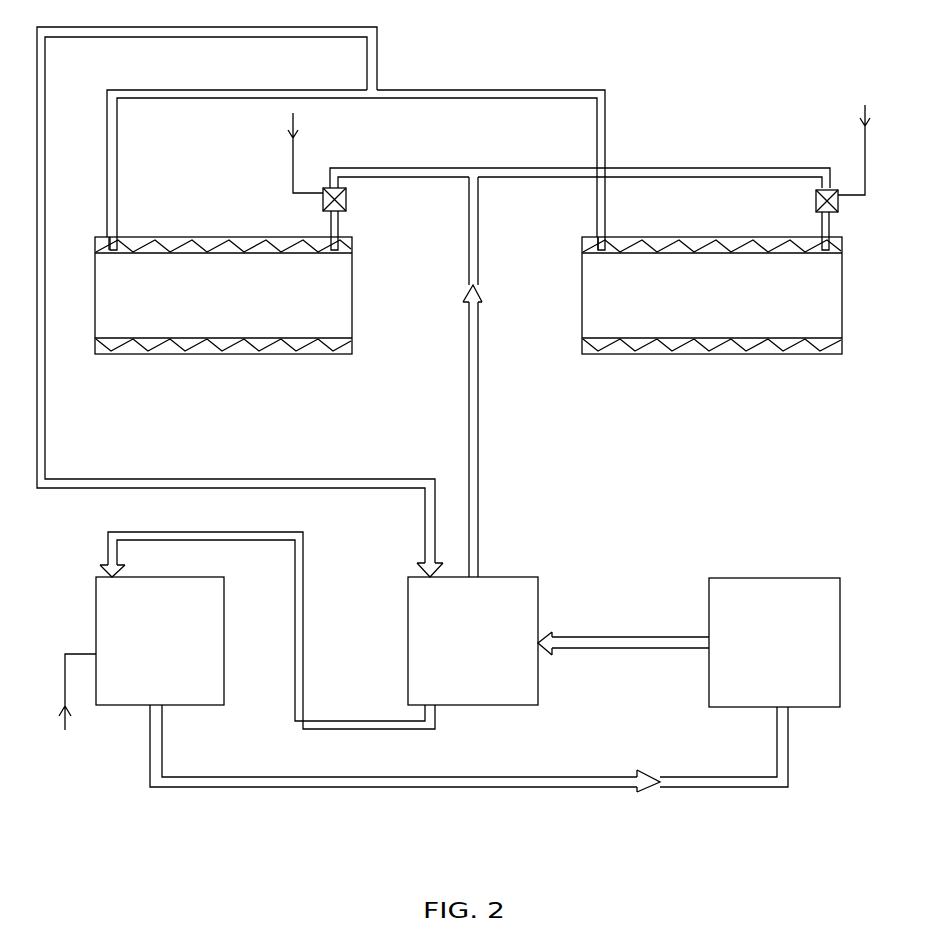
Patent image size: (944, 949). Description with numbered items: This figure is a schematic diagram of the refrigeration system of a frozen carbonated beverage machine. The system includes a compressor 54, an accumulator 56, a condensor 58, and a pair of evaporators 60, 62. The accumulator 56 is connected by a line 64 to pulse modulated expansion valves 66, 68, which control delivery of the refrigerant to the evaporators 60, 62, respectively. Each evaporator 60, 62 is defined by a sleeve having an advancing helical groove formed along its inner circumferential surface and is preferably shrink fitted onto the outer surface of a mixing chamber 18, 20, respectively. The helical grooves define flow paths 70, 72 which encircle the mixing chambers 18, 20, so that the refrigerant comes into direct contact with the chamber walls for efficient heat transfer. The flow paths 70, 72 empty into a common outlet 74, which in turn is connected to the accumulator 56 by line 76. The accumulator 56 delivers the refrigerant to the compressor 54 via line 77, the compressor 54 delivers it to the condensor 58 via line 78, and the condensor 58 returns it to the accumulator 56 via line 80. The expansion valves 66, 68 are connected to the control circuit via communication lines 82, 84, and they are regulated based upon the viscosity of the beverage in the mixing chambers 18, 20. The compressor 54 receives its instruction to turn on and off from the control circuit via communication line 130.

The mixing chamber 18 is at (249, 265).
The mixing chamber 20 is at (681, 273).
The compressor 54 is at (96, 605).
The accumulator 56 is at (408, 603).
The condensor 58 is at (840, 600).
The evaporator 60 is at (178, 246).
The evaporator 62 is at (637, 246).
The line 64 is at (469, 347).
The pulse modulated expansion valve 66 is at (346, 199).
The pulse modulated expansion valve 68 is at (838, 205).
The flow path 70 is at (148, 248).
The flow path 72 is at (698, 246).
The common outlet 74 is at (230, 99).
The line 76 is at (45, 458).
The line 77 is at (295, 712).
The line 78 is at (378, 790).
The line 80 is at (647, 633).
The communication line 82 is at (306, 146).
The communication line 84 is at (866, 142).
The communication line 130 is at (60, 702).